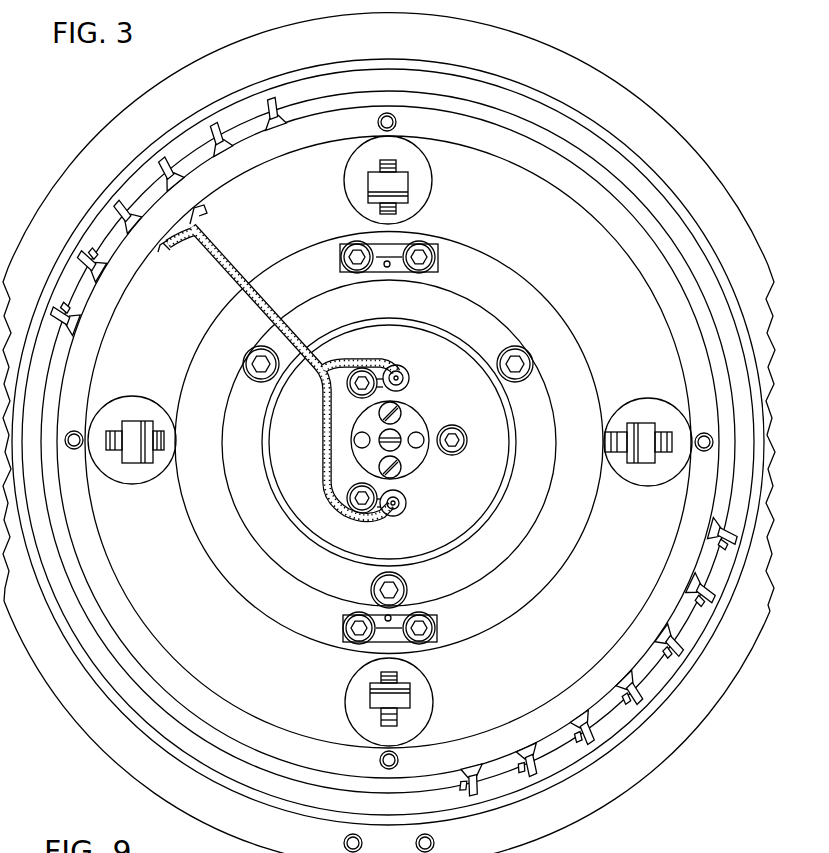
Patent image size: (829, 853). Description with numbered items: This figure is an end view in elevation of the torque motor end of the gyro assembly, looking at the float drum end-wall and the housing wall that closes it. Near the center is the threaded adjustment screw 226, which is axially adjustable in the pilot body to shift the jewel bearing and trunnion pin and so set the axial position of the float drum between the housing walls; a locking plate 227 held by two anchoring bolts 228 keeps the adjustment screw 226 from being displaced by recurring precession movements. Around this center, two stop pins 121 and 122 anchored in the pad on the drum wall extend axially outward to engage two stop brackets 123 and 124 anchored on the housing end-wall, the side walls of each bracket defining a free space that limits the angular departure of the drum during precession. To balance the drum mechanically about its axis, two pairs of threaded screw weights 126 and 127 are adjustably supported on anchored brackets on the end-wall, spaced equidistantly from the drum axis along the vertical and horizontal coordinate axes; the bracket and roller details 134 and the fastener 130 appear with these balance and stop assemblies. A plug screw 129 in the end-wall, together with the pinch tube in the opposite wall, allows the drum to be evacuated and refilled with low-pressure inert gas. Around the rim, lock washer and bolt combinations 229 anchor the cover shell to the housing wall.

The stop pin 121 is at (387, 262).
The stop pin 122 is at (388, 616).
The stop bracket 123 is at (400, 247).
The stop bracket 124 is at (432, 642).
The threaded screw weights 126 is at (392, 168).
The threaded screw weights 127 is at (113, 436).
The plug screw 129 is at (410, 272).
The bracket bolt 130 is at (382, 647).
The guide roller 134 is at (377, 181).
The adjustment screw 226 is at (401, 437).
The locking plate 227 is at (416, 462).
The anchoring bolts 228 is at (401, 406).
The lock washer and bolt combinations 229 is at (404, 589).